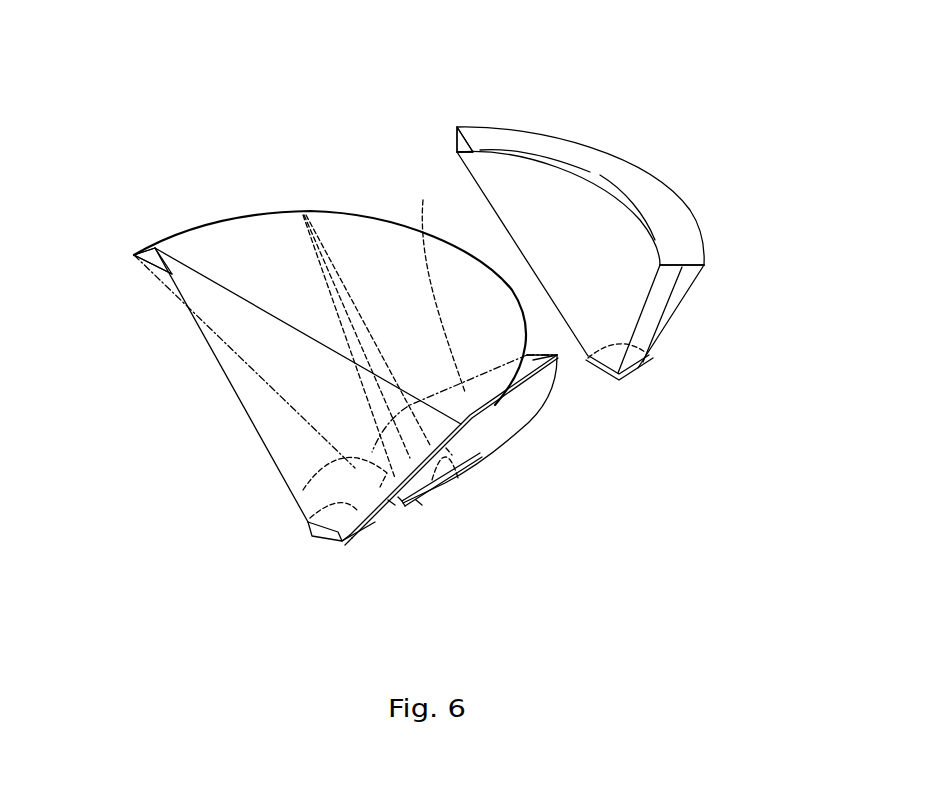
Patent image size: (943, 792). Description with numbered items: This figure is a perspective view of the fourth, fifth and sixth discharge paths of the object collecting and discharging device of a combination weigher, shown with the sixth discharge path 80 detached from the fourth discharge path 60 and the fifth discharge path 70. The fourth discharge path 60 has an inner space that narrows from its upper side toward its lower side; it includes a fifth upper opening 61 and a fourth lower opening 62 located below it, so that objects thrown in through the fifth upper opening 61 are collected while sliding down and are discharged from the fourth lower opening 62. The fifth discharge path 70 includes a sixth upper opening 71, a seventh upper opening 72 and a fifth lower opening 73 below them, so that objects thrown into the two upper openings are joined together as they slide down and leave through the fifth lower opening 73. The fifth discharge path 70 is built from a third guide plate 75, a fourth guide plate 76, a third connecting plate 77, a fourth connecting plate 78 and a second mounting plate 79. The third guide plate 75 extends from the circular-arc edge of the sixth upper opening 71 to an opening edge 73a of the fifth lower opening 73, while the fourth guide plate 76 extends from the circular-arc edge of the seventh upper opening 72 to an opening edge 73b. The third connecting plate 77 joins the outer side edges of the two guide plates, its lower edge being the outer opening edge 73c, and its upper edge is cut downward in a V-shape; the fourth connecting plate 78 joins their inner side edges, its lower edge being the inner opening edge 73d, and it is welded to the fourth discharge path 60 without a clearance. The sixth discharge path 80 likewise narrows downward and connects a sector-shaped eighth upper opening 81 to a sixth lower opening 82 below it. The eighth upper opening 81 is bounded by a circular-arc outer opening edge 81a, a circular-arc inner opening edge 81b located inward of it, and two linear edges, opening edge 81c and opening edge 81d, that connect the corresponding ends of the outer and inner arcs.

The fourth discharge path 60 is at (332, 198).
The fifth upper opening 61 is at (363, 237).
The fourth lower opening 62 is at (335, 527).
The fifth discharge path 70 is at (476, 472).
The sixth upper opening 71 is at (520, 410).
The seventh upper opening 72 is at (186, 244).
The fifth lower opening 73 is at (402, 508).
The opening edge of the fifth lower opening 73a is at (430, 512).
The opening edge of the fifth lower opening 73b is at (303, 490).
The opening edge of the fifth lower opening 73c is at (452, 455).
The opening edge of the fifth lower opening 73d is at (390, 507).
The third guide plate 75 is at (498, 435).
The fourth guide plate 76 is at (145, 250).
The third connecting plate 77 is at (533, 360).
The fourth connecting plate 78 is at (420, 508).
The second mounting plate 79 is at (438, 281).
The sixth discharge path 80 is at (698, 205).
The eighth upper opening 81 is at (603, 157).
The outer opening edge 81a is at (640, 168).
The inner opening edge 81b is at (550, 167).
The opening edge 81c is at (677, 263).
The opening edge 81d is at (457, 127).
The sixth lower opening 82 is at (627, 367).